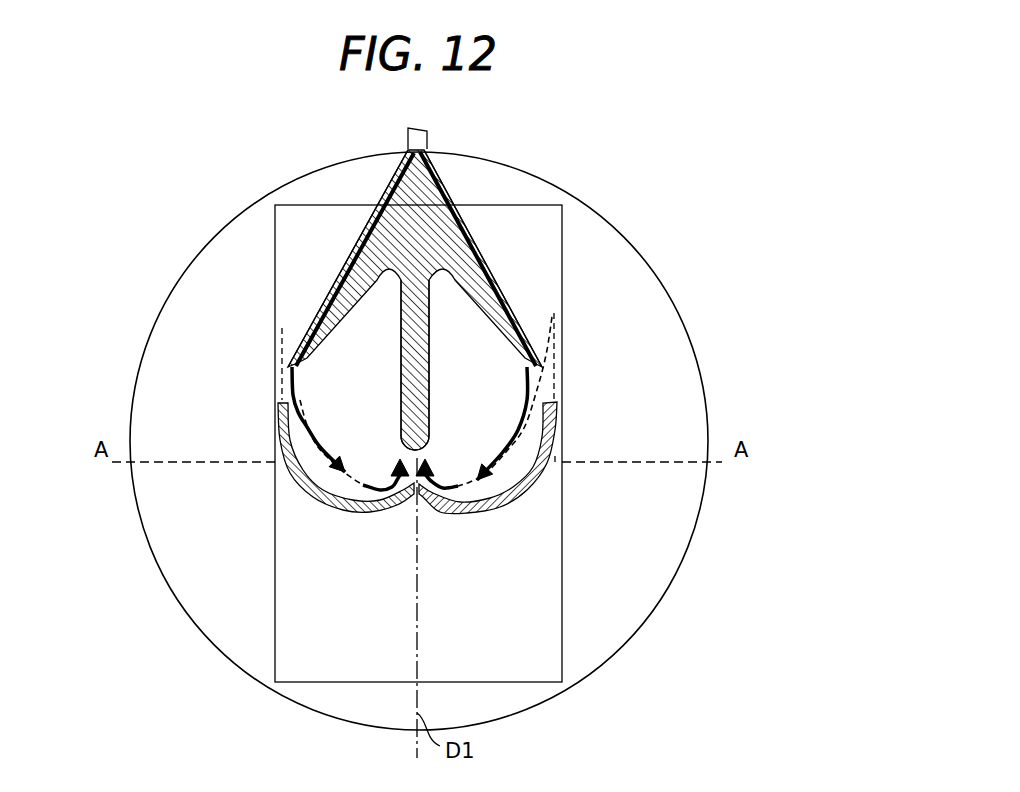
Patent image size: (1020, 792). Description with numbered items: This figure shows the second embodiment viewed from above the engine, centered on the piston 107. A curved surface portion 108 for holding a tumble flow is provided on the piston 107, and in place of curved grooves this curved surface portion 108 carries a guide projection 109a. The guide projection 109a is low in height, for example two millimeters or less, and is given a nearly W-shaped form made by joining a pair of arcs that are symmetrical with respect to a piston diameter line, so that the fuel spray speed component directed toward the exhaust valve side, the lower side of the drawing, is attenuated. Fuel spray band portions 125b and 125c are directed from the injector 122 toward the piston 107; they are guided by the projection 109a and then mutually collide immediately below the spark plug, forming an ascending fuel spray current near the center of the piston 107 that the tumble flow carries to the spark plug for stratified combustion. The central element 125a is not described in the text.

The piston 107 is at (300, 180).
The curved surface portion 108 is at (561, 622).
The injector 122 is at (428, 137).
The central partition wall 125a is at (410, 397).
The fuel spray band portion 125b is at (313, 312).
The fuel spray band portion 125c is at (517, 307).
The guide projection 109a is at (470, 514).